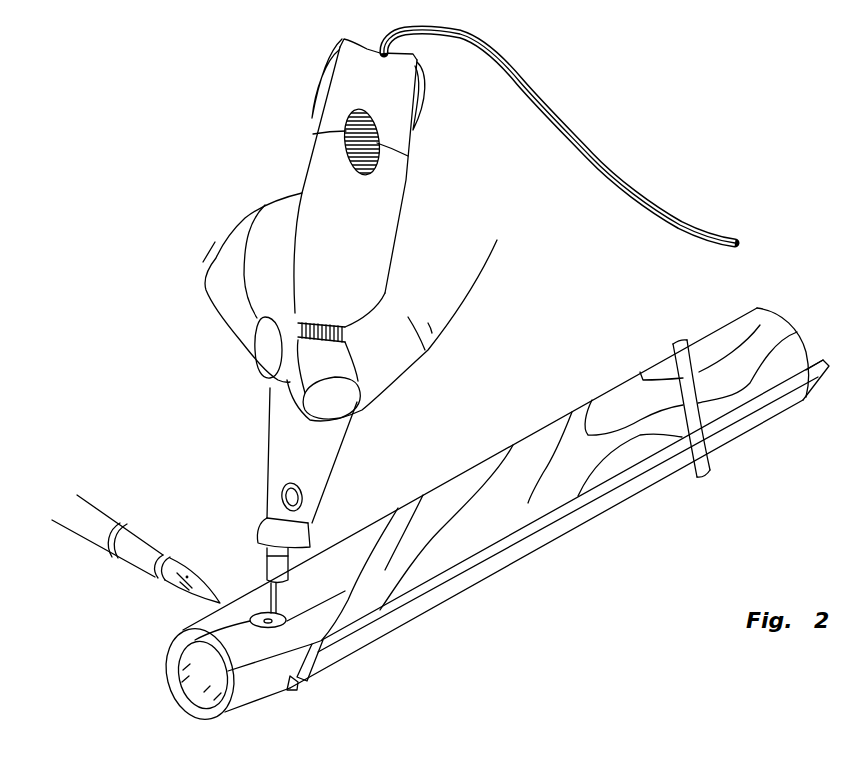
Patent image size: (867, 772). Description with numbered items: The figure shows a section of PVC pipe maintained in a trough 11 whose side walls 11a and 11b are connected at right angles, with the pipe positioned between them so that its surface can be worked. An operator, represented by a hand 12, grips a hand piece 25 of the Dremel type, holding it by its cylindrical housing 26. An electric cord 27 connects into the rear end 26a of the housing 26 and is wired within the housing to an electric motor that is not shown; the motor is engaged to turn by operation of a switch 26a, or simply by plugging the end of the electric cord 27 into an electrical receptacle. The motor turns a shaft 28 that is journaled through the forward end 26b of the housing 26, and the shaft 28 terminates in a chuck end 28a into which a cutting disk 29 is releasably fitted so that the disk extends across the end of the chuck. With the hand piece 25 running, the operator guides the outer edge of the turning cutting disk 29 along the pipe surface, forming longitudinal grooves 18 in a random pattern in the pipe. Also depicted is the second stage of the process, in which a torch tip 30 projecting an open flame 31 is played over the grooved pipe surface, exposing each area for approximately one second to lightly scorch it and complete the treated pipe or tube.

The trough 11 is at (626, 510).
The side wall 11a is at (313, 666).
The side wall 11b is at (290, 690).
The hand 12 is at (451, 254).
The grooves 18 is at (195, 654).
The hand piece 25 is at (243, 461).
The cylindrical housing 26 is at (320, 173).
The rear end 26a is at (346, 34).
The forward end 26b is at (376, 153).
The electric cord 27 is at (590, 147).
The shaft 28 is at (290, 619).
The chuck end 28a is at (268, 582).
The cutting disk 29 is at (318, 634).
The torch tip 30 is at (94, 541).
The open flame 31 is at (185, 570).